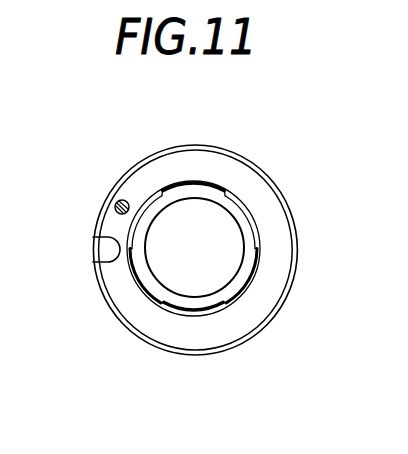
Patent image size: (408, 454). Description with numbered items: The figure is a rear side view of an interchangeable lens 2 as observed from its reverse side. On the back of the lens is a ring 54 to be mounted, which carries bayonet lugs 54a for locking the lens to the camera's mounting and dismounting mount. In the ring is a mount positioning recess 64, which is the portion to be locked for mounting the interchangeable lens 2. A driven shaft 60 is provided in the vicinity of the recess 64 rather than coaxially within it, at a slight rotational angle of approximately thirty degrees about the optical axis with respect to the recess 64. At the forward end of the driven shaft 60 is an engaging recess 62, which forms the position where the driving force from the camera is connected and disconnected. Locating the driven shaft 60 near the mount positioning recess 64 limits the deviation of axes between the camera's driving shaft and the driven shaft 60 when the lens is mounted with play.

The interchangeable lens 2 is at (247, 152).
The ring to be mounted 54 is at (278, 262).
The bayonet lugs 54a is at (249, 222).
The driven shaft 60 is at (121, 200).
The engaging recess 62 is at (115, 203).
The mount positioning recess 64 is at (102, 255).